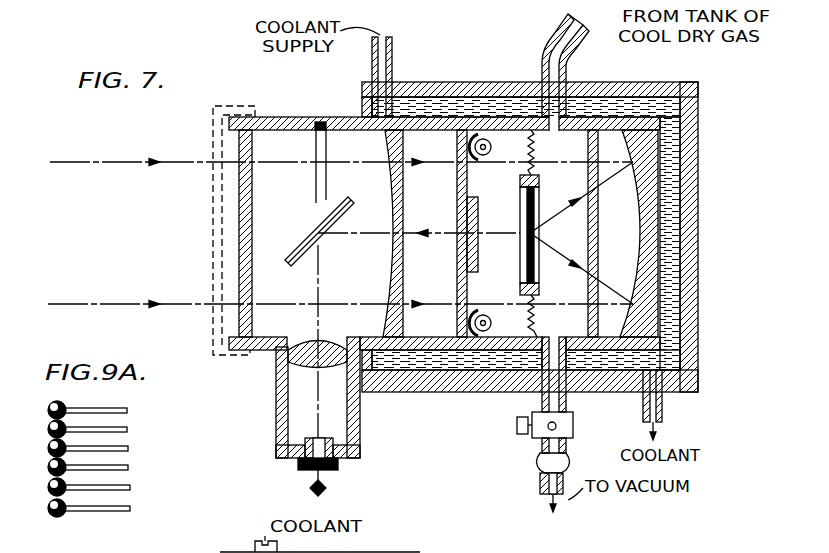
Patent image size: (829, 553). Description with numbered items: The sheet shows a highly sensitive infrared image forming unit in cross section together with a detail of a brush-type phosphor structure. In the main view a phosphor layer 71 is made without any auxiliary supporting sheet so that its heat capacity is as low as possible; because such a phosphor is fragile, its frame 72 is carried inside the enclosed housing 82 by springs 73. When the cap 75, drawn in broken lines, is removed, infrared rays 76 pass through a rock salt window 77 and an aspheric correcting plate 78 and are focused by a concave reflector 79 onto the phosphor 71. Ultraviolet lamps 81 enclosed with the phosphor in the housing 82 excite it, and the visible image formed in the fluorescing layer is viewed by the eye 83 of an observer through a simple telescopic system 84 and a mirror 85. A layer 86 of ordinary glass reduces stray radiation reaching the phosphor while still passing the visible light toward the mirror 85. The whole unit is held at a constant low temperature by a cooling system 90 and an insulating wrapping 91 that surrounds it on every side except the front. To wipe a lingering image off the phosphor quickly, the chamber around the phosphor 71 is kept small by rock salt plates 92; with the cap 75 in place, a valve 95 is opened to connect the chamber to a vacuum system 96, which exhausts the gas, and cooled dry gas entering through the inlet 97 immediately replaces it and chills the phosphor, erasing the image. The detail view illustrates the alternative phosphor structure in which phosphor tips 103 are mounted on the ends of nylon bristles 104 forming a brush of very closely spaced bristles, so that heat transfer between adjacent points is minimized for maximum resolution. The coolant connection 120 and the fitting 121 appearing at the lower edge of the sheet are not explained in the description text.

In FIG. 7, the light source 71 is at (521, 200).
In FIG. 7, the source holder 72 is at (540, 182).
In FIG. 7, the springs 73 is at (535, 152).
In FIG. 7, the cover 75 is at (227, 358).
In FIG. 7, the light beams 76 is at (168, 300).
In FIG. 7, the window 77 is at (251, 188).
In FIG. 7, the concave lens 78 is at (404, 187).
In FIG. 7, the lens 79 is at (650, 262).
In FIG. 7, the screws 81 is at (491, 148).
In FIG. 7, the mirror support rod 82 is at (337, 117).
In FIG. 7, the fiber connector 83 is at (330, 488).
In FIG. 7, the lens tube 84 is at (355, 420).
In FIG. 7, the mirror 85 is at (315, 245).
In FIG. 7, the stop 86 is at (478, 258).
In FIG. 7, the coolant jacket 90 is at (445, 105).
In FIG. 7, the housing 91 is at (678, 84).
In FIG. 7, the windows 92 is at (457, 286).
In FIG. 7, the valve 95 is at (574, 425).
In FIG. 7, the vacuum fitting 96 is at (538, 482).
In FIG. 7, the gas inlet tube 97 is at (549, 27).
In FIG. 9A, the spheres 103 is at (50, 470).
In FIG. 9A, the pins 104 is at (130, 470).
In FIG. 7, the coolant connection 120 is at (441, 552).
In FIG. 7, the fitting 121 is at (498, 552).